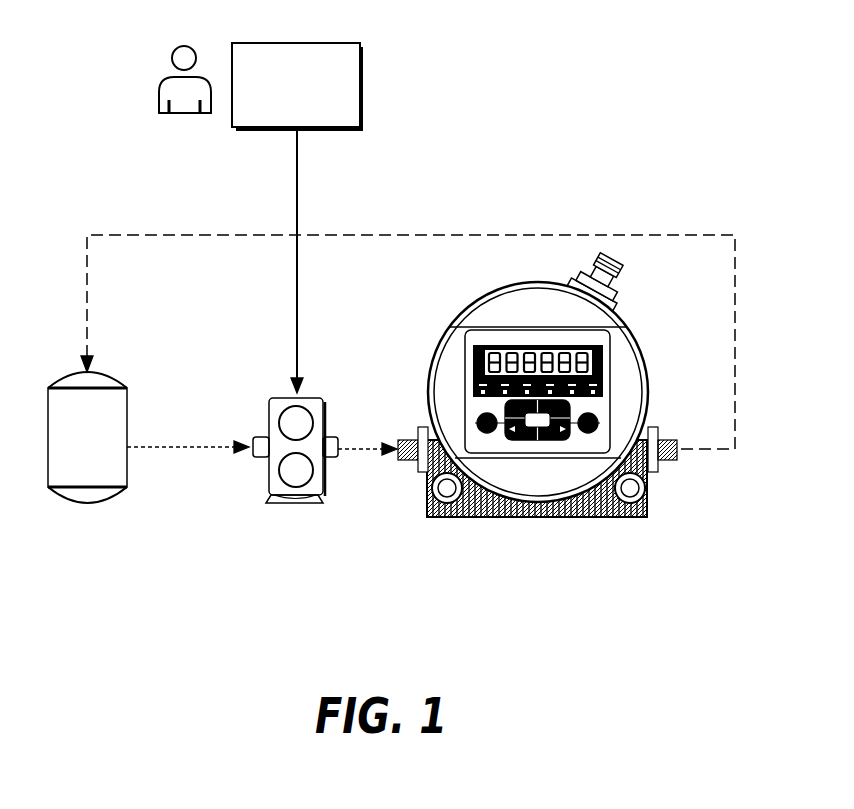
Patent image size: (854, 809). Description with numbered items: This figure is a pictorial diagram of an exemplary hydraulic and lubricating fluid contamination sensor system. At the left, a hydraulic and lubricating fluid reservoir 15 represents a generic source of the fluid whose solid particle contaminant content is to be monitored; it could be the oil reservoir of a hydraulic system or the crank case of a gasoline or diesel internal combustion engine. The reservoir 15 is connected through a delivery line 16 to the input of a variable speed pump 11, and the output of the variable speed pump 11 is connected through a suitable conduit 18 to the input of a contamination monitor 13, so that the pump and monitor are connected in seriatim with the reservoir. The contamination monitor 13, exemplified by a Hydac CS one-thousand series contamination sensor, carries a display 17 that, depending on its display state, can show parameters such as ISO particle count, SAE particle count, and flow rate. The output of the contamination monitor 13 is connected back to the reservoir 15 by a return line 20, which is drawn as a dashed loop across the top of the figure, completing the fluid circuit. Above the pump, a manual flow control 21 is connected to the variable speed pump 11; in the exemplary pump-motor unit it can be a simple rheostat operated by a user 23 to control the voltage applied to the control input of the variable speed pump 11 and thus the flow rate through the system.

The variable speed pump 11 is at (326, 408).
The contamination monitor 13 is at (543, 408).
The hydraulic and lubricating fluid reservoir 15 is at (60, 377).
The delivery line 16 is at (190, 449).
The display 17 is at (498, 347).
The conduit 18 is at (363, 451).
The return line 20 is at (735, 332).
The manual flow control 21 is at (361, 78).
The user 23 is at (157, 83).